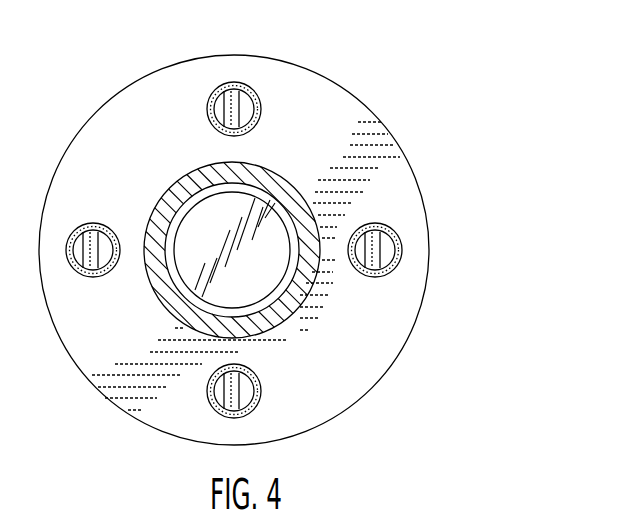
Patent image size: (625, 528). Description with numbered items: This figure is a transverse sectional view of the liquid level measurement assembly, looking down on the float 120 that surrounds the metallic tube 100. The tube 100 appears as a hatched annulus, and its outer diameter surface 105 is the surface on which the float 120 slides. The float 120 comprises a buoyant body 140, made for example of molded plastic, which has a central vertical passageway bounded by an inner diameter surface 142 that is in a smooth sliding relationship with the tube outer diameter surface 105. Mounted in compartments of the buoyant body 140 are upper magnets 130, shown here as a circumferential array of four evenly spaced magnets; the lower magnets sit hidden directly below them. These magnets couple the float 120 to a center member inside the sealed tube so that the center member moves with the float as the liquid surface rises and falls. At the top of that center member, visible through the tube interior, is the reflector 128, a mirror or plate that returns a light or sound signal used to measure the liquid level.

The tube 100 is at (273, 182).
The outer diameter surface 105 is at (215, 296).
The float 120 is at (465, 302).
The reflector 128 is at (268, 265).
The upper magnets 130 is at (382, 247).
The buoyant body 140 is at (390, 188).
The inner diameter surface 142 is at (205, 294).